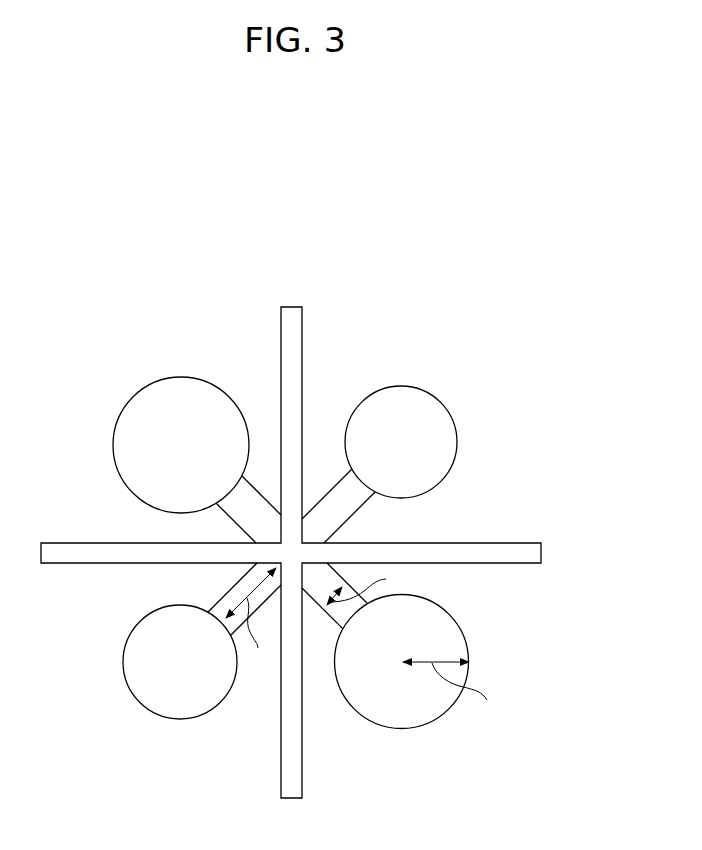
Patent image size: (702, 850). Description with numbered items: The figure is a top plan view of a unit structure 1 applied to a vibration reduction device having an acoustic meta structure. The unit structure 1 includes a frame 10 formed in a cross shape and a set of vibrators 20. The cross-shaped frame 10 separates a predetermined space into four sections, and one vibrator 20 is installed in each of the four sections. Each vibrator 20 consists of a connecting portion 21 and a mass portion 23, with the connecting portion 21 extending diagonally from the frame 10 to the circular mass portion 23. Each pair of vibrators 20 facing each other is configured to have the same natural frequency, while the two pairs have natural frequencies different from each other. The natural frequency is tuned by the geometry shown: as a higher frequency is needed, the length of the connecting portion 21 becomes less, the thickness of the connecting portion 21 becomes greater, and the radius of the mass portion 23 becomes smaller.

The unit structure 1 is at (168, 224).
The frame 10 is at (291, 318).
The vibrator 20 is at (539, 423).
The connecting portion 21 is at (343, 508).
The mass portion 23 is at (440, 440).